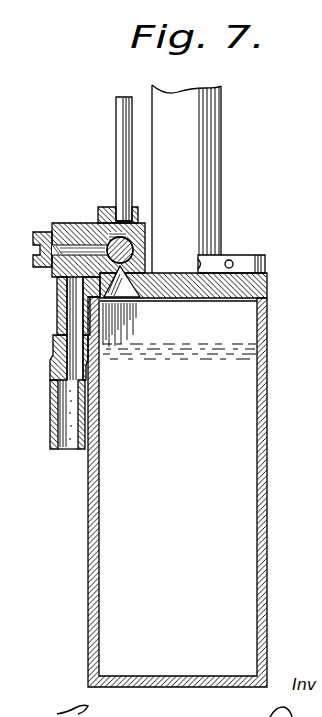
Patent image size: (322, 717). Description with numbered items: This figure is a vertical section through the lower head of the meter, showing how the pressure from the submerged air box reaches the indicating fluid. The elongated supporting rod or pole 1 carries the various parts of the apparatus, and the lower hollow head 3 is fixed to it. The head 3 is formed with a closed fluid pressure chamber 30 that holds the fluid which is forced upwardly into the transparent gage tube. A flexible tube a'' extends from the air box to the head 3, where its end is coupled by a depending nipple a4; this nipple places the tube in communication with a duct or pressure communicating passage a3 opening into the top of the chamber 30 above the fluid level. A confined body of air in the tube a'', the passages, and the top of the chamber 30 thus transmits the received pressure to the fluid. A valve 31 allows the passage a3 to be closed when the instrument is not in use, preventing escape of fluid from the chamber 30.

The supporting rod or pole 1 is at (210, 158).
The pressure communicating passage a3 is at (80, 230).
The valve 31 is at (131, 245).
The lower hollow head 3 is at (277, 287).
The closed fluid pressure chamber 30 is at (179, 349).
The depending nipple a4 is at (60, 306).
The flexible tube a'' is at (61, 431).